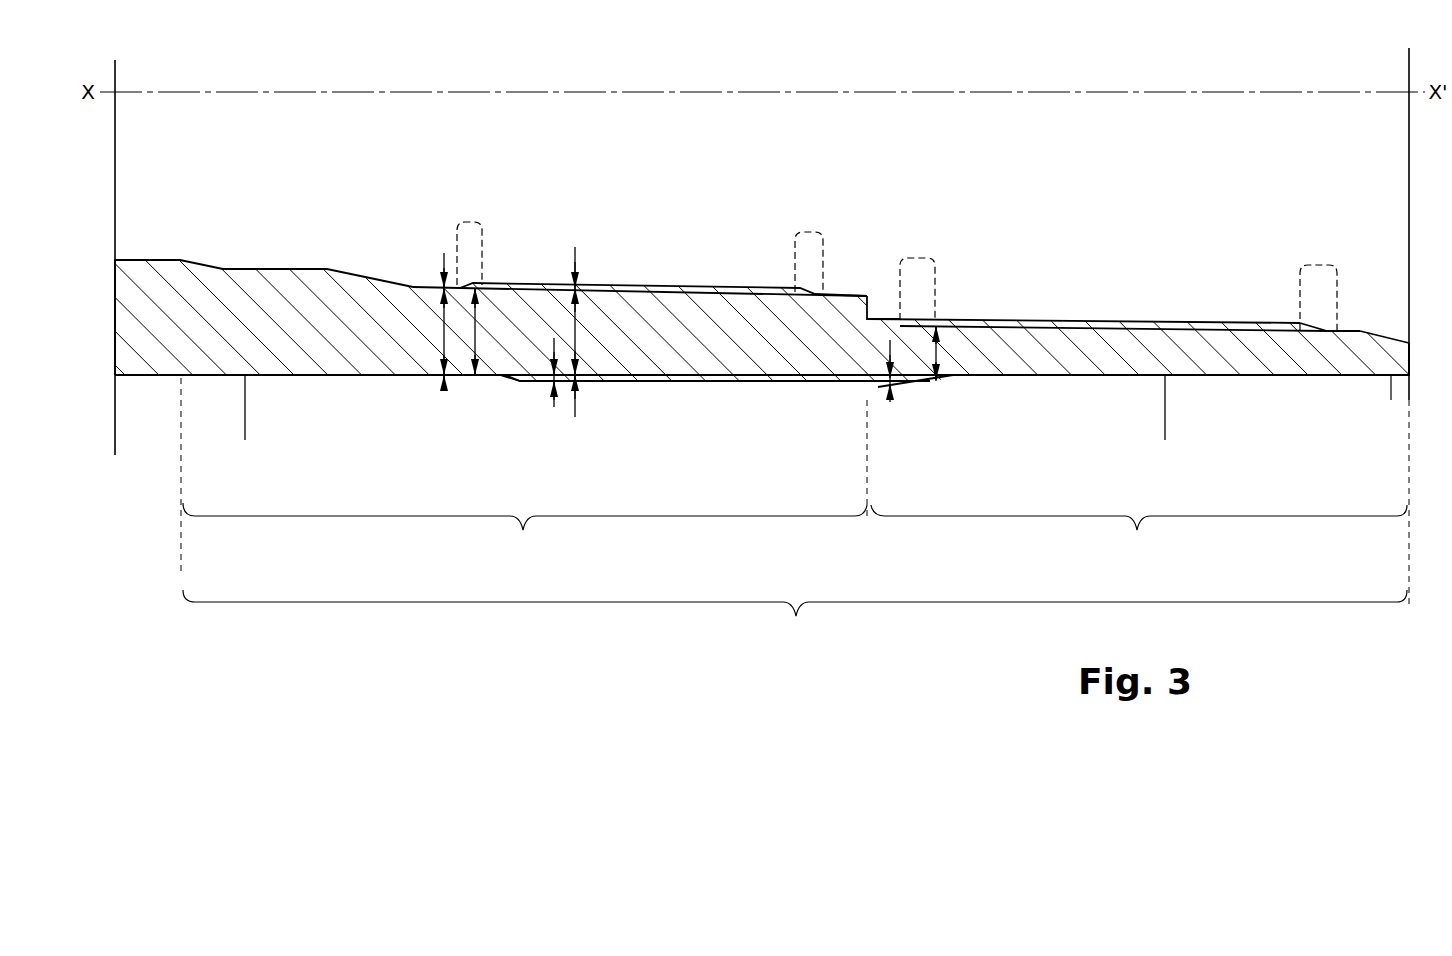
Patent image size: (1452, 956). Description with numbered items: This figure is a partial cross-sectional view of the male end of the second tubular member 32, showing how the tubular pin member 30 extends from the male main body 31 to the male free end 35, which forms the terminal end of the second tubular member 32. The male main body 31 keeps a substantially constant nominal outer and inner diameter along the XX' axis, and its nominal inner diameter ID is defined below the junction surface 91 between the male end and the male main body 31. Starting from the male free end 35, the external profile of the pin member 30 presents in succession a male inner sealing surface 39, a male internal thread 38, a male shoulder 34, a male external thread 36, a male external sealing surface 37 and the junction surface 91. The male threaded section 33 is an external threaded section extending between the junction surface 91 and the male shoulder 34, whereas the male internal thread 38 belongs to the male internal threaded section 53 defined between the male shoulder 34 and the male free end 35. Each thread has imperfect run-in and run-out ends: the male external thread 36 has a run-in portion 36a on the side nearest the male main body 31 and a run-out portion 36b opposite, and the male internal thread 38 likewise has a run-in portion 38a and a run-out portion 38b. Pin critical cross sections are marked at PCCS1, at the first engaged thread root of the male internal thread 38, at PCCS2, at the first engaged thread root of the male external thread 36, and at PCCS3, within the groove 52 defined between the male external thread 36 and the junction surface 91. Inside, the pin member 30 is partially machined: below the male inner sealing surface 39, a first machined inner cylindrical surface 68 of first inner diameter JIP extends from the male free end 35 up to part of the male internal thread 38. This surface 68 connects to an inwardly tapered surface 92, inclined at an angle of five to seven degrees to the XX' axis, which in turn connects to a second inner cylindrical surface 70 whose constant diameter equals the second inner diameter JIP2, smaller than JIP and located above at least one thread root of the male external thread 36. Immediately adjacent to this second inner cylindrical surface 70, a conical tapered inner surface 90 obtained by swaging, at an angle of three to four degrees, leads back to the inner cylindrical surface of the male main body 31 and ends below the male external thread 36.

The pin member 30 is at (795, 616).
The male main body 31 is at (135, 328).
The second tubular member 32 is at (1296, 67).
The male threaded section 33 is at (525, 530).
The male shoulder 34 is at (880, 309).
The male free end 35 is at (1394, 350).
The male external thread 36 is at (665, 287).
The run-in portion 36a is at (468, 241).
The run-out portion 36b is at (812, 246).
The male external sealing surface 37 is at (346, 272).
The male internal thread 38 is at (1177, 325).
The run-in portion 38a is at (917, 275).
The run-out portion 38b is at (1318, 284).
The male inner sealing surface 39 is at (1386, 336).
The groove 52 is at (405, 287).
The male internal threaded section 53 is at (1139, 531).
The first machined inner cylindrical surface 68 is at (1122, 377).
The second inner cylindrical surface 70 is at (695, 382).
The conical tapered inner surface 90 is at (516, 378).
The junction surface 91 is at (203, 262).
The inwardly tapered surface 92 is at (952, 384).
The nominal inner diameter ID is at (245, 375).
The first inner diameter JIP is at (1165, 375).
The second inner diameter JIP2 is at (601, 332).
The pin critical cross section PCCS1 is at (937, 353).
The pin critical cross section PCCS2 is at (477, 330).
The pin critical cross section PCCS3 is at (444, 330).